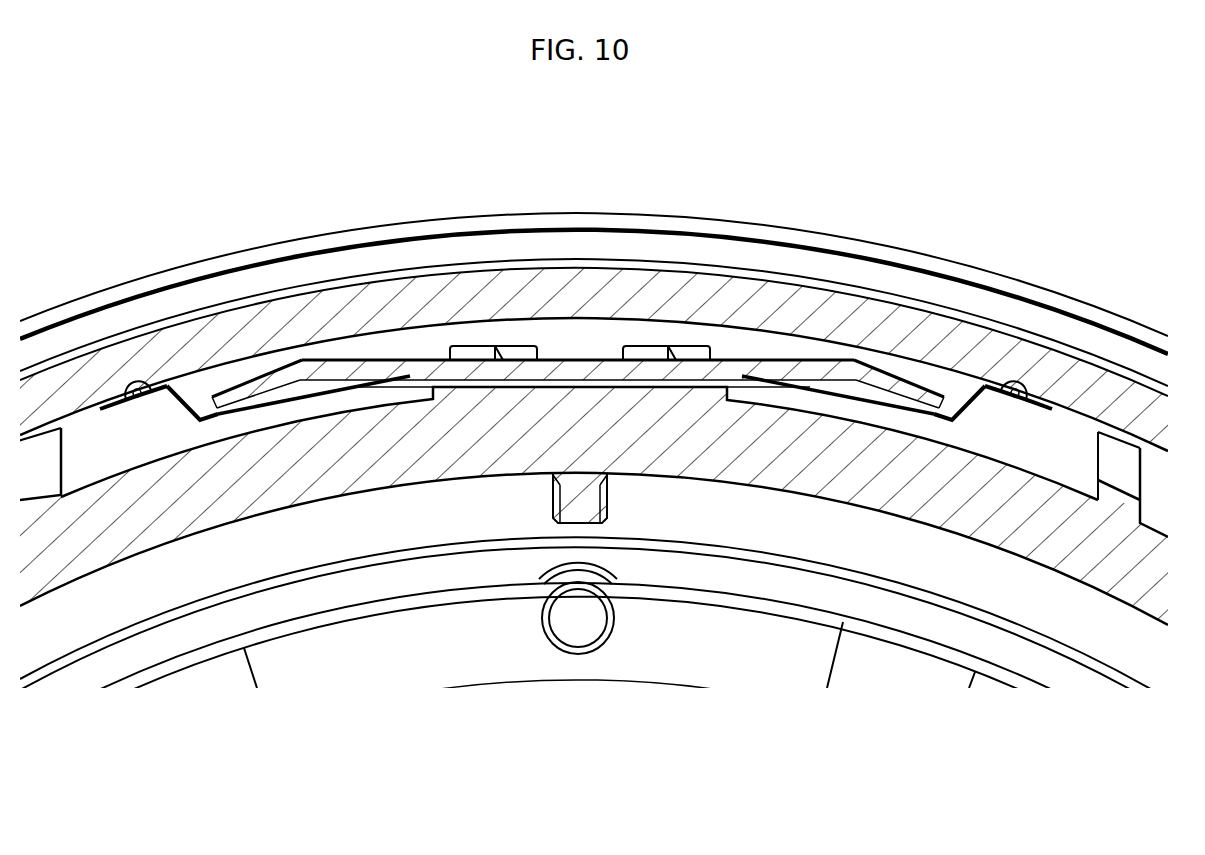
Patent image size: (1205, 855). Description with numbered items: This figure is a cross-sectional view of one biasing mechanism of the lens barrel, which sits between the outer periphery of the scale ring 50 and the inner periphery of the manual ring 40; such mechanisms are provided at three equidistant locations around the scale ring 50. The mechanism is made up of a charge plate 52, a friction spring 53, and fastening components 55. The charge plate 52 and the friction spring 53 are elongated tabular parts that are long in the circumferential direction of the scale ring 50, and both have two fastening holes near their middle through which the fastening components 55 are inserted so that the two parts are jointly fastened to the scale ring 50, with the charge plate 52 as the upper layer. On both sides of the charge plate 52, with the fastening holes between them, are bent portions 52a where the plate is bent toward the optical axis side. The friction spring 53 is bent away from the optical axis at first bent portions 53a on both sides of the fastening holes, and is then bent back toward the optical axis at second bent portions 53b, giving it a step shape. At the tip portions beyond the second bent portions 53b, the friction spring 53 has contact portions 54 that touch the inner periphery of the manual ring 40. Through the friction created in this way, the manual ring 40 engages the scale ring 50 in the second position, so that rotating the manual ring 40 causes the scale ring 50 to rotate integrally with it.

The manual ring 40 is at (470, 296).
The scale ring 50 is at (366, 468).
The charge plate 52 is at (578, 277).
The bent portion 52a is at (305, 370).
The friction spring 53 is at (593, 480).
The first bent portion 53a is at (197, 440).
The second bent portion 53b is at (165, 384).
The contact portion 54 is at (130, 383).
The fastening component 55 is at (523, 346).